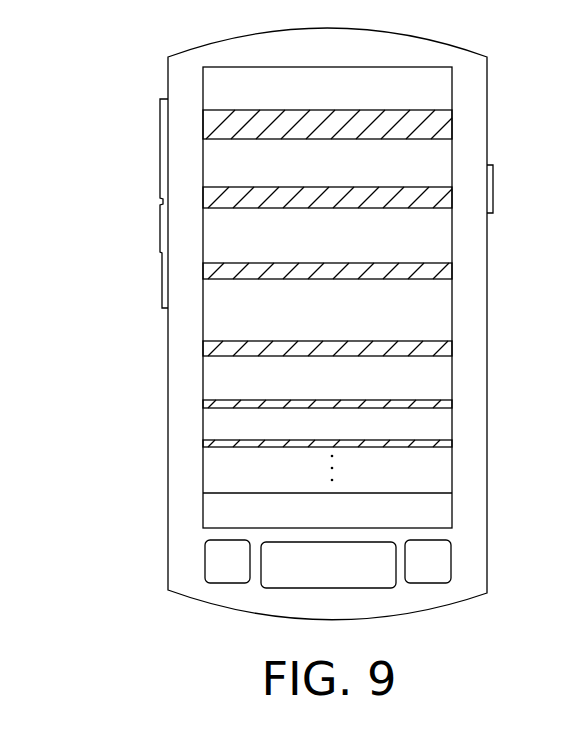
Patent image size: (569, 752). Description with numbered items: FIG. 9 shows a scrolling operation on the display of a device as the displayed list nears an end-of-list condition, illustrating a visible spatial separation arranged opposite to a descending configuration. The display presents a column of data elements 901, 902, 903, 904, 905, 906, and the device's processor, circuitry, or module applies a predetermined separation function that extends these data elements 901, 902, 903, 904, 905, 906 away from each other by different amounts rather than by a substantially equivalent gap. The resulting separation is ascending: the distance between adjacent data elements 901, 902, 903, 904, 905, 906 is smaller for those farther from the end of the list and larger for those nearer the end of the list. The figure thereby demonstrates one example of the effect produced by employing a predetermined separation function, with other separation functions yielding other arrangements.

The data element 901 is at (443, 100).
The data element 902 is at (443, 162).
The data element 903 is at (443, 250).
The data element 904 is at (443, 315).
The data element 905 is at (443, 380).
The data element 906 is at (441, 423).